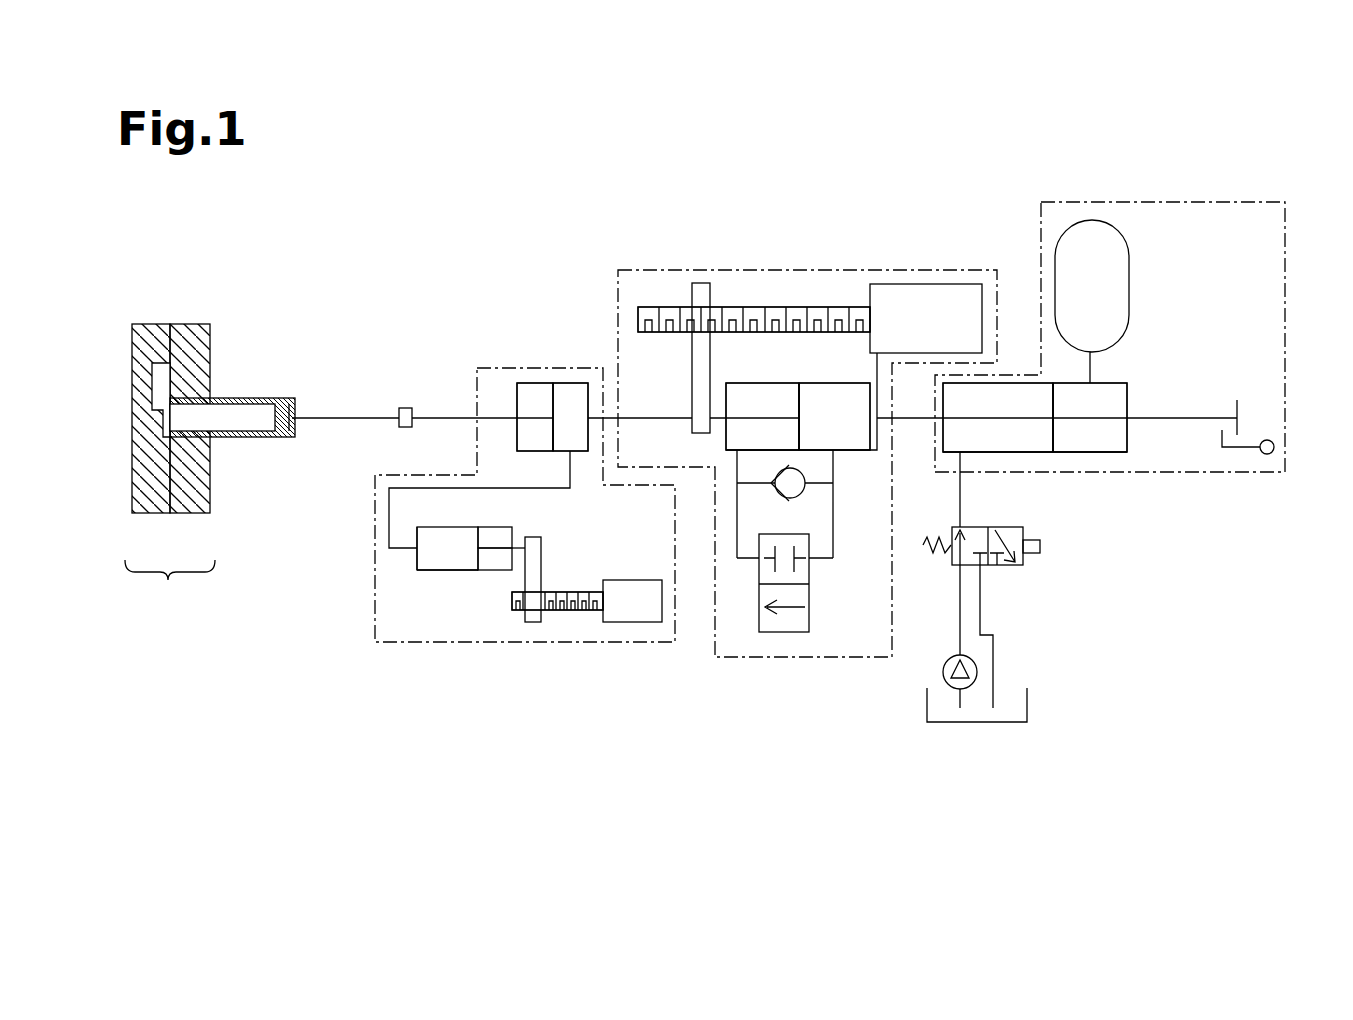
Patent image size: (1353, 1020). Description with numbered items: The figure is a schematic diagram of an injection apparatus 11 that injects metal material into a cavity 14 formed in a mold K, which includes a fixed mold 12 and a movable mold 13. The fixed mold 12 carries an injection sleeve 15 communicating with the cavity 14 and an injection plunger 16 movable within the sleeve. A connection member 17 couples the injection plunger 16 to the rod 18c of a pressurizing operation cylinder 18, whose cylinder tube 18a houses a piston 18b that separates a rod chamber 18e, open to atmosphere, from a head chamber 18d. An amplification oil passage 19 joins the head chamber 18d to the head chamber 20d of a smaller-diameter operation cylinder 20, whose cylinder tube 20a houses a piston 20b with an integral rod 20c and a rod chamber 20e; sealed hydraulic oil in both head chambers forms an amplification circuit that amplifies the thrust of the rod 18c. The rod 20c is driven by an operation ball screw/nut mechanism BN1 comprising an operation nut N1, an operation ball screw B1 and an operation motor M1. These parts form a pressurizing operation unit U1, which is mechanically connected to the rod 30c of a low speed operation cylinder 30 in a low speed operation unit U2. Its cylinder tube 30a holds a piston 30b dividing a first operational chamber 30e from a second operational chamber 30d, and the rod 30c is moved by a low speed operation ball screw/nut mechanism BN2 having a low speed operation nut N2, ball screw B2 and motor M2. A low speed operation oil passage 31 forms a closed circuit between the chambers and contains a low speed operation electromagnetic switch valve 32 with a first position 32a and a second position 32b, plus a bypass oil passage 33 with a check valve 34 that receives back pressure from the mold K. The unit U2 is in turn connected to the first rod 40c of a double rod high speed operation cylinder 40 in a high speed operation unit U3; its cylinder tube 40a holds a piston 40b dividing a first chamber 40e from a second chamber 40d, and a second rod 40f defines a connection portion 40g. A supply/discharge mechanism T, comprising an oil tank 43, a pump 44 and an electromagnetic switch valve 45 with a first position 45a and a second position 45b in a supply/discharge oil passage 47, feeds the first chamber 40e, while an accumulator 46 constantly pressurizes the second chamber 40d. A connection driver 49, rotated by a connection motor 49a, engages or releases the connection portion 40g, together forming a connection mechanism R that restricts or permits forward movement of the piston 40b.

The injection apparatus 11 is at (953, 204).
The fixed mold 12 is at (192, 512).
The movable mold 13 is at (150, 512).
The cavity 14 is at (160, 382).
The injection sleeve 15 is at (282, 438).
The injection plunger 16 is at (283, 402).
The connection member 17 is at (403, 407).
The pressurizing operation cylinder 18 is at (540, 382).
The cylinder tube 18a is at (527, 382).
The piston 18b is at (550, 438).
The rod 18c is at (440, 410).
The head chamber 18d is at (573, 395).
The rod chamber 18e is at (523, 432).
The amplification oil passage 19 is at (390, 528).
The operation cylinder 20 is at (423, 575).
The cylinder tube 20a is at (440, 575).
The piston 20b is at (477, 557).
The rod 20c is at (520, 547).
The head chamber 20d is at (413, 557).
The rod chamber 20e is at (497, 533).
The operation nut N1 is at (535, 622).
The operation ball screw B1 is at (570, 587).
The operation motor M1 is at (627, 580).
The operation ball screw/nut mechanism BN1 is at (612, 628).
The pressurizing operation unit U1 is at (379, 650).
The low speed operation nut N2 is at (700, 280).
The low speed operation ball screw B2 is at (778, 305).
The low speed operation motor M2 is at (915, 283).
The low speed operation ball screw/nut mechanism BN2 is at (841, 296).
The low speed operation cylinder 30 is at (783, 380).
The cylinder tube 30a is at (853, 452).
The piston 30b is at (800, 432).
The rod 30c is at (653, 417).
The second operational chamber 30d is at (833, 392).
The first operational chamber 30e is at (745, 393).
The low speed operation oil passage 31 is at (737, 558).
The low speed operation electromagnetic switch valve 32 is at (785, 633).
The first position 32a is at (812, 573).
The second position 32b is at (812, 618).
The bypass oil passage 33 is at (748, 487).
The check valve 34 is at (780, 500).
The low speed operation unit U2 is at (718, 662).
The high speed operation cylinder 40 is at (1132, 383).
The cylinder tube 40a is at (1130, 435).
The piston 40b is at (1055, 437).
The first rod 40c is at (910, 420).
The second chamber 40d is at (1110, 443).
The first chamber 40e is at (980, 440).
The second rod 40f is at (1180, 417).
The connection portion 40g is at (1240, 400).
The oil tank 43 is at (1027, 708).
The pump 44 is at (942, 665).
The electromagnetic switch valve 45 is at (1023, 565).
The first position 45a is at (955, 567).
The second position 45b is at (1005, 526).
The accumulator 46 is at (1132, 270).
The supply/discharge oil passage 47 is at (977, 625).
The connection driver 49 is at (1240, 450).
The connection motor 49a is at (1273, 454).
The connection mechanism R is at (1287, 447).
The supply/discharge mechanism T is at (1000, 598).
The mold K is at (170, 582).
The high speed operation unit U3 is at (1201, 494).